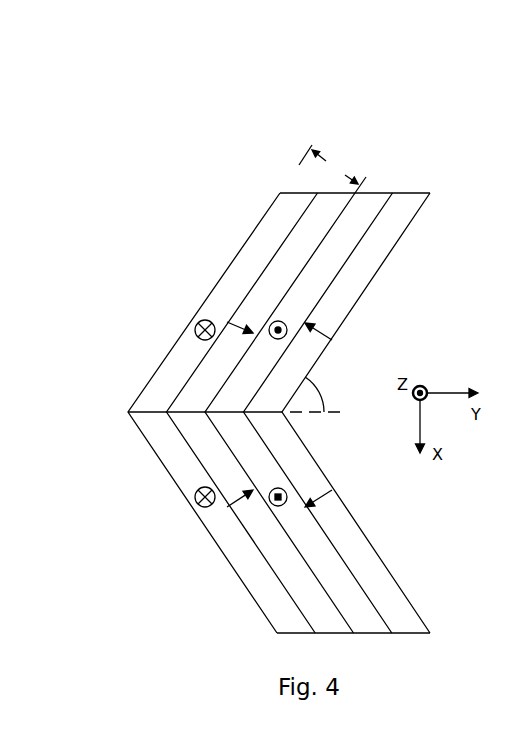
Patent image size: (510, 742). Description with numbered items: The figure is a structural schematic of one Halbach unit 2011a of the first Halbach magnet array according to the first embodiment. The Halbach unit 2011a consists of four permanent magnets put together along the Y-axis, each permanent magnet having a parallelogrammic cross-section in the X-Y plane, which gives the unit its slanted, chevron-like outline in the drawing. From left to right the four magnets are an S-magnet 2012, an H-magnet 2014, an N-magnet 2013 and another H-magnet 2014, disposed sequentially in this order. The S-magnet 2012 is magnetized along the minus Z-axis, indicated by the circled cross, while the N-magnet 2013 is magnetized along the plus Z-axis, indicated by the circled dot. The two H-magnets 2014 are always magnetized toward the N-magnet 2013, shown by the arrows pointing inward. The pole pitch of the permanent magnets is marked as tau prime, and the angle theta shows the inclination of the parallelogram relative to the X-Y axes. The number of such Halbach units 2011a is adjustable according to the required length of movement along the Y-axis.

The Halbach unit 2011a is at (305, 337).
The S-magnet 2012 is at (222, 303).
The N-magnet 2013 is at (347, 230).
The H-magnet 2014 is at (272, 290).